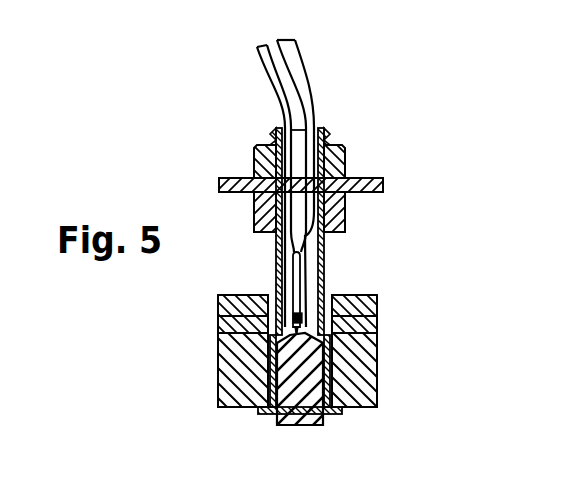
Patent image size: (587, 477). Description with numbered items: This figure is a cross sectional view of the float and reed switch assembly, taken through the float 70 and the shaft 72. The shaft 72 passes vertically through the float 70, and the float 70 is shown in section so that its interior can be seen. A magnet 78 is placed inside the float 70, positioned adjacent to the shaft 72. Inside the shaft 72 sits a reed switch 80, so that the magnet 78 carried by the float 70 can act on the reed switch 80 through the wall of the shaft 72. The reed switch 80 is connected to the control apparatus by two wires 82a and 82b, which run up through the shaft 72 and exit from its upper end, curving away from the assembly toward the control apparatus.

The float 70 is at (377, 362).
The shaft 72 is at (325, 248).
The magnet 78 is at (377, 322).
The reed switch 80 is at (325, 278).
The wire 82a is at (268, 76).
The wire 82b is at (310, 80).